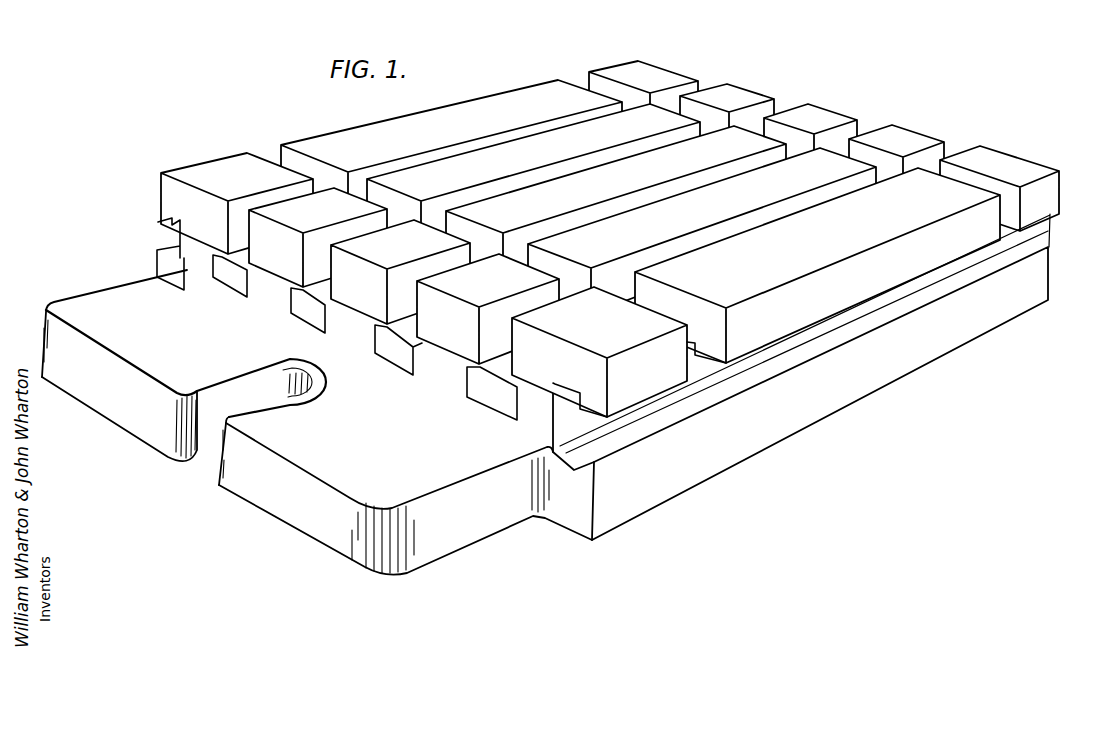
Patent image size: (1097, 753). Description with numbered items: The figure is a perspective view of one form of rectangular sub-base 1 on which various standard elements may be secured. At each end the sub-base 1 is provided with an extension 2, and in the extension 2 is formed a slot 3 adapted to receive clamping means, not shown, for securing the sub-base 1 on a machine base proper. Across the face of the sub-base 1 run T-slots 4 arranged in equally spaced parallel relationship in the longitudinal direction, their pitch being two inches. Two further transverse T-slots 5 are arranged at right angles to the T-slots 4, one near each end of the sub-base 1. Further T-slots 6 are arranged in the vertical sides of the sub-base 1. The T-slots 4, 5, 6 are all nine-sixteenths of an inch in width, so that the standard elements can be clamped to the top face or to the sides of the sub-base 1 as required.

The sub-base 1 is at (562, 313).
The extension 2 is at (562, 395).
The slot 3 is at (205, 430).
The T-slots 4 is at (470, 193).
The transverse T-slots 5 is at (610, 239).
The T-slots in vertical sides 6 is at (168, 243).